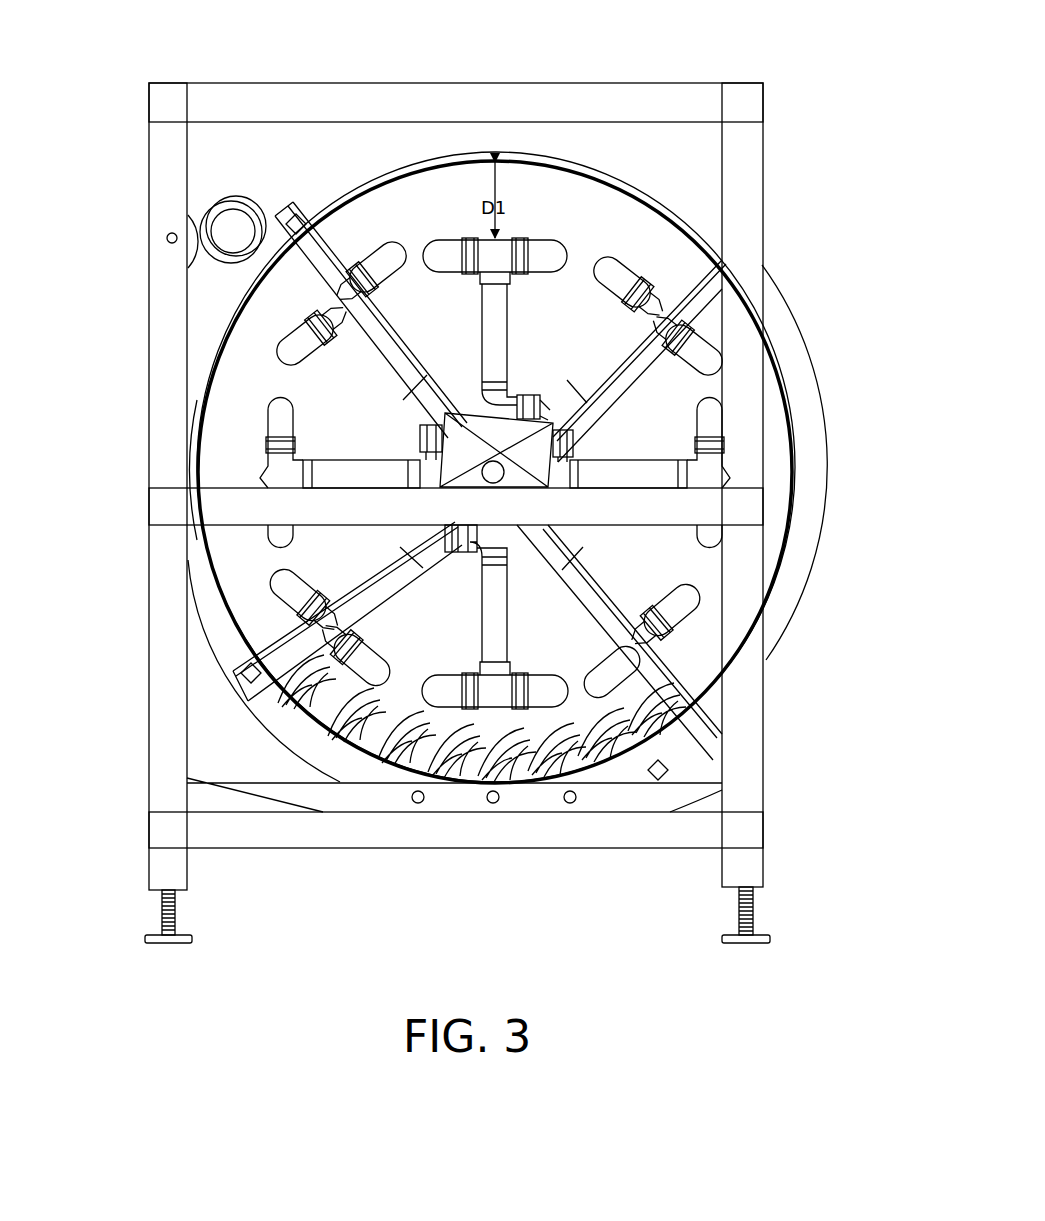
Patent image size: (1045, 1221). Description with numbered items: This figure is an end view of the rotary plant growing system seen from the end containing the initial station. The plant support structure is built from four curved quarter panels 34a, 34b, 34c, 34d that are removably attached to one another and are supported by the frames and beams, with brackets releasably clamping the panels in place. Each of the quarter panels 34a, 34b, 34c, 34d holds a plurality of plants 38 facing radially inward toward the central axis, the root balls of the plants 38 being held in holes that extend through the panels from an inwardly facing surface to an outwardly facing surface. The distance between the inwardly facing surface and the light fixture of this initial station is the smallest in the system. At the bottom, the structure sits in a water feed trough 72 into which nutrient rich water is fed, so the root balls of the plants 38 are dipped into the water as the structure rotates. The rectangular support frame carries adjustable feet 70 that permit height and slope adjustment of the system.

The curved quarter panel 34a is at (493, 152).
The curved quarter panel 34b is at (800, 583).
The curved quarter panel 34c is at (335, 752).
The curved quarter panel 34d is at (207, 583).
The plant 38 is at (452, 780).
The adjustable foot 70 is at (169, 943).
The water feed trough 72 is at (658, 793).